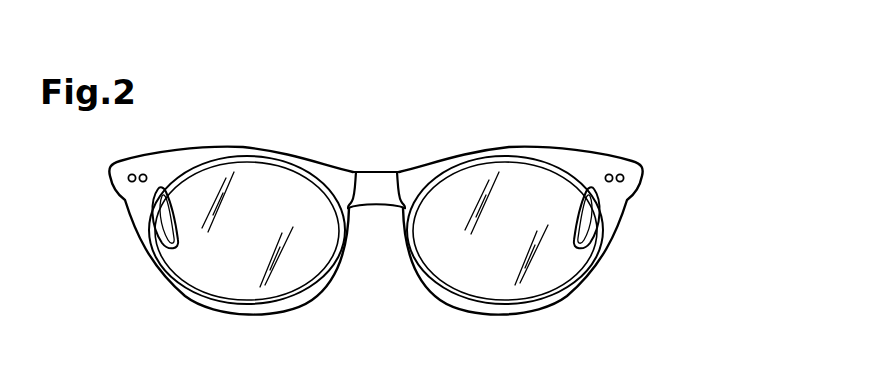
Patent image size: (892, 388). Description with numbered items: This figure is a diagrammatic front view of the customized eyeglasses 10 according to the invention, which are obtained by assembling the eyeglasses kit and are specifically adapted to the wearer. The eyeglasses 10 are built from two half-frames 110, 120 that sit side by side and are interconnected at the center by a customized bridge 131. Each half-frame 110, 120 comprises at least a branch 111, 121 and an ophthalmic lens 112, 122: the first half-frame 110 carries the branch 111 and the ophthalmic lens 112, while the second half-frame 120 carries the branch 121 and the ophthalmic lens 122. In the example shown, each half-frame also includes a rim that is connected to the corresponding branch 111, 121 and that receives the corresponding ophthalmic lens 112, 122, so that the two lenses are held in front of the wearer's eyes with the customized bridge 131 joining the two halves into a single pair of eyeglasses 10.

The eyeglasses 10 is at (446, 192).
The half-frame 110 is at (233, 113).
The branch 111 is at (172, 237).
The ophthalmic lens 112 is at (234, 283).
The half-frame 120 is at (519, 113).
The branch 121 is at (578, 238).
The ophthalmic lens 122 is at (480, 285).
The customized bridge 131 is at (377, 184).